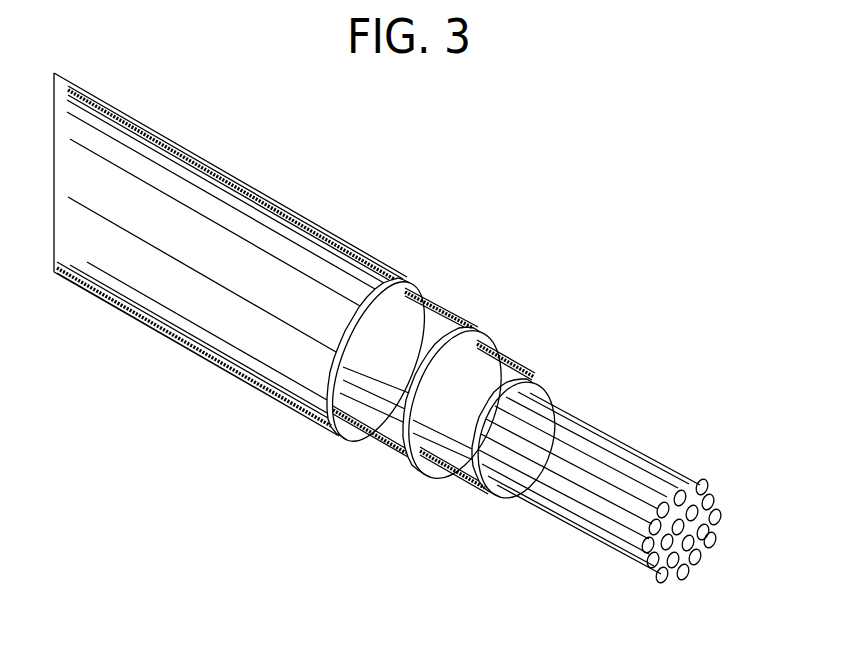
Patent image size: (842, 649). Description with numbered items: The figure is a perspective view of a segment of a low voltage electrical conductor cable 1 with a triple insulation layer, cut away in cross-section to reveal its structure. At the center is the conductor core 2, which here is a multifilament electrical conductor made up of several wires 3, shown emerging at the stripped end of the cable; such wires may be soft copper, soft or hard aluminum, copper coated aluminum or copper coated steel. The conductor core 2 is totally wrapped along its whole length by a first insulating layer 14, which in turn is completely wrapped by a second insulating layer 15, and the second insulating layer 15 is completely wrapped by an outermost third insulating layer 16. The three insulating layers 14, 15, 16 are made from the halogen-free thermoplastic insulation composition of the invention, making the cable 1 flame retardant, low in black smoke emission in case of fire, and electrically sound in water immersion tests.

The conductor cable 1 is at (355, 222).
The conductor core 2 is at (651, 589).
The wires 3 is at (552, 503).
The first insulating layer 14 is at (490, 372).
The second insulating layer 15 is at (367, 433).
The third insulating layer 16 is at (248, 340).